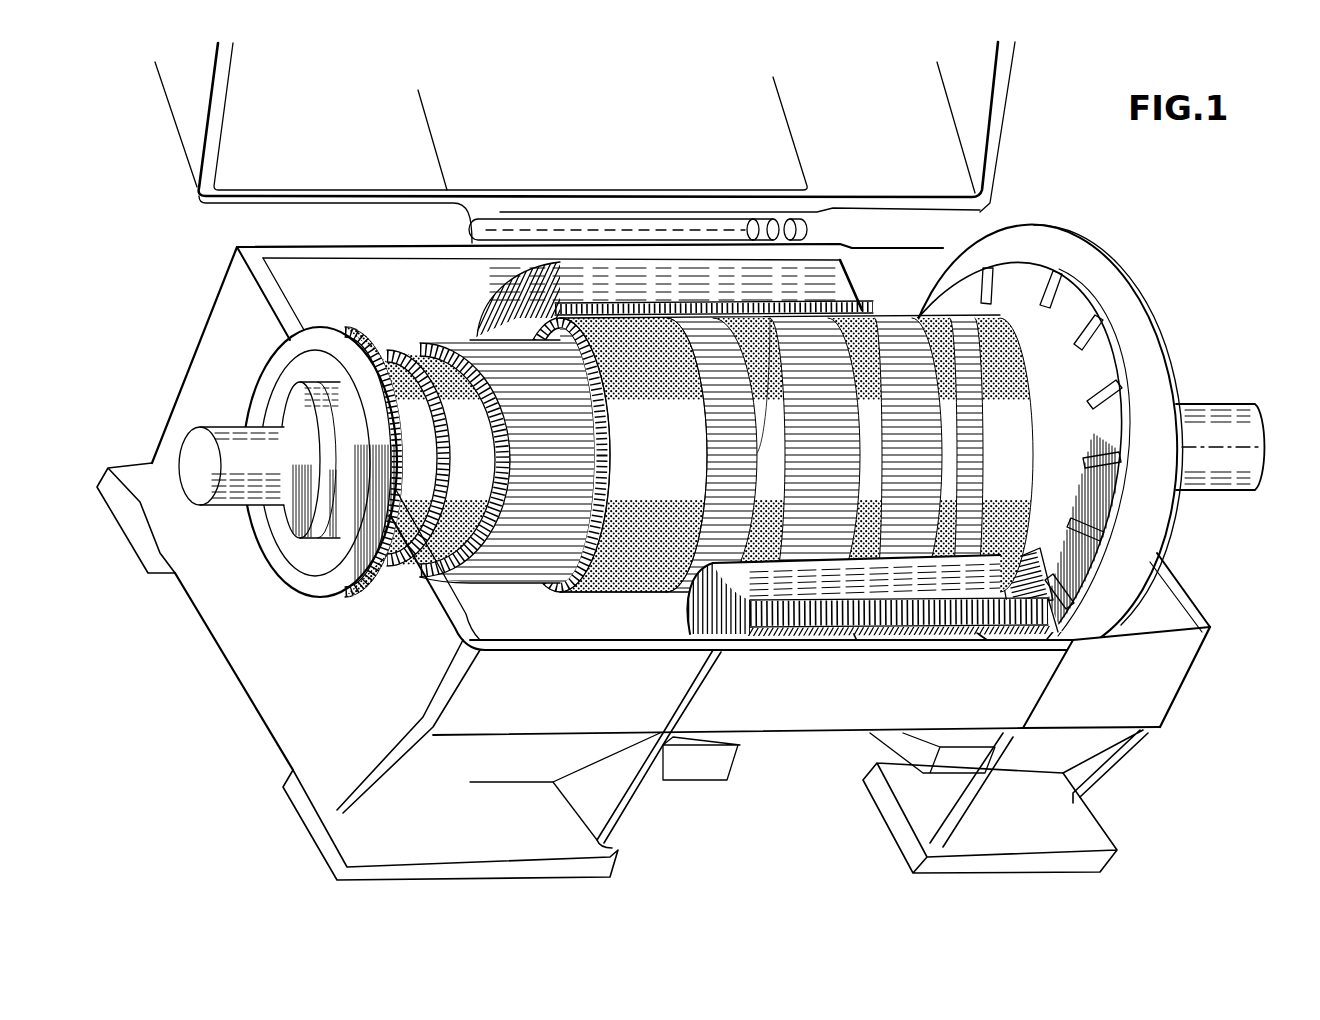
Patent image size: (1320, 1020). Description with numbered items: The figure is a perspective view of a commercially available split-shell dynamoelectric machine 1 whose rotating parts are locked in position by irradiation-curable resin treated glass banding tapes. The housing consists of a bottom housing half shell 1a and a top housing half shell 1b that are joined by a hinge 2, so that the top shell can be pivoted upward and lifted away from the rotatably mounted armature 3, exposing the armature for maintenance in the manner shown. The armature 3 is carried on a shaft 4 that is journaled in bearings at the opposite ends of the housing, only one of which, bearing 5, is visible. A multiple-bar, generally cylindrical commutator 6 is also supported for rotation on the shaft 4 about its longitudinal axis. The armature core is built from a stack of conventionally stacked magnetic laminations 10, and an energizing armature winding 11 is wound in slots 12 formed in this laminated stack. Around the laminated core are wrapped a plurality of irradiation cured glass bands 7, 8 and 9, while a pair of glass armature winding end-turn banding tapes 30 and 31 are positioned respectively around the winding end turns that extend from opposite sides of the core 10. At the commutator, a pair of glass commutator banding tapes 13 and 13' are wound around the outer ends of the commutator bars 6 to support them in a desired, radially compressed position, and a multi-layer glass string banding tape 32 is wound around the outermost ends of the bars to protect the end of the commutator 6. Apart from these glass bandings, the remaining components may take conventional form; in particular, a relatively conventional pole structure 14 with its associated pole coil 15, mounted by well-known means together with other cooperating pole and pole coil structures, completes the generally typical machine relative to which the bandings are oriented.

The dynamoelectric machine 1 is at (196, 271).
The bottom housing half shell 1a is at (197, 320).
The top housing half shell 1b is at (197, 186).
The hinge 2 is at (468, 222).
The armature 3 is at (655, 597).
The shaft 4 is at (1243, 405).
The bearing 5 is at (273, 392).
The commutator 6 is at (475, 342).
The irradiation cured glass band 7 is at (945, 441).
The irradiation cured glass band 8 is at (860, 444).
The irradiation cured glass band 9 is at (780, 447).
The magnetic laminations 10 is at (714, 456).
The armature winding 11 is at (714, 444).
The slots 12 is at (754, 443).
The glass commutator banding tape 13 is at (467, 480).
The glass commutator banding tape 13' is at (560, 469).
The pole structure 14 is at (975, 630).
The pole coil 15 is at (1030, 622).
The glass armature winding end-turn banding tape 30 is at (669, 449).
The glass armature winding end-turn banding tape 31 is at (1020, 412).
The multi-layer glass string banding tape 32 is at (405, 355).